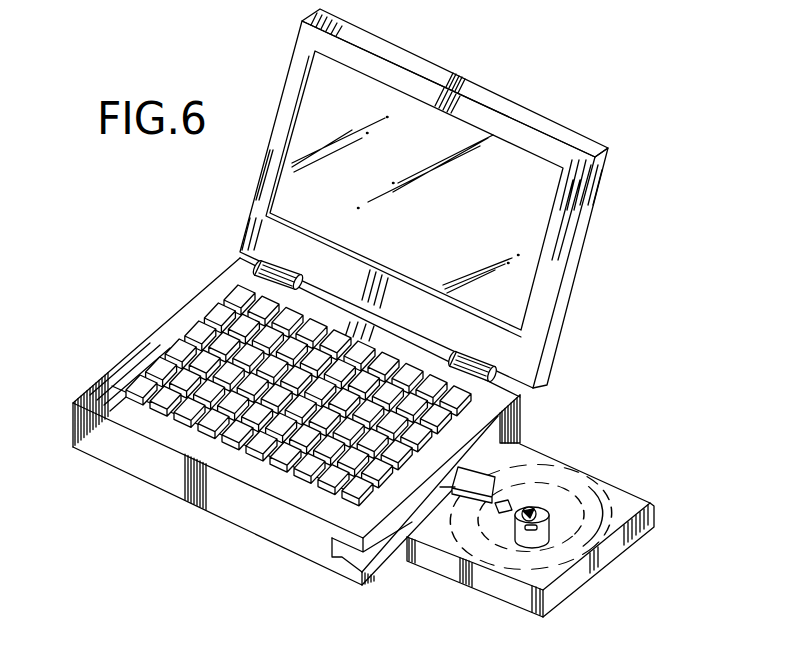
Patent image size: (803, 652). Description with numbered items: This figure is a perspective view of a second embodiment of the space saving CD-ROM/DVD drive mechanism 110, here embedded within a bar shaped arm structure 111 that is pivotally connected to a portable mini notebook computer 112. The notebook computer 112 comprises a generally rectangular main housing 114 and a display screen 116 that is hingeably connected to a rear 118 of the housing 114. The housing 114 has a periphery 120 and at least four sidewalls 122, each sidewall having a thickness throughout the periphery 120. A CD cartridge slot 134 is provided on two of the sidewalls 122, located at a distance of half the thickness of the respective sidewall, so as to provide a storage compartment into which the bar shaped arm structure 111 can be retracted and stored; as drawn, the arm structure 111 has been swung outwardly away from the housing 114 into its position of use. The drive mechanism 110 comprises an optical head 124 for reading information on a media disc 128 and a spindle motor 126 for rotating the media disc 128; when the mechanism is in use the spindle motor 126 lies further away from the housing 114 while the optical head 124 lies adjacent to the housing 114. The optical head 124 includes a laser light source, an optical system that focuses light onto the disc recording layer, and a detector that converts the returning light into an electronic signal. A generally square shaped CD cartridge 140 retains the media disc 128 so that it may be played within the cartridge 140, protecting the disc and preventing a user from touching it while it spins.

The space saving CD-ROM/DVD drive mechanism 110 is at (540, 535).
The bar shaped arm structure 111 is at (440, 487).
The portable mini notebook computer 112 is at (474, 198).
The main housing 114 is at (187, 302).
The display screen 116 is at (573, 288).
The rear 118 is at (313, 441).
The periphery 120 is at (223, 503).
The sidewalls 122 is at (73, 420).
The optical head 124 is at (526, 508).
The spindle motor 126 is at (597, 470).
The media disc 128 is at (637, 525).
The CD cartridge slot 134 is at (338, 552).
The CD cartridge 140 is at (548, 612).